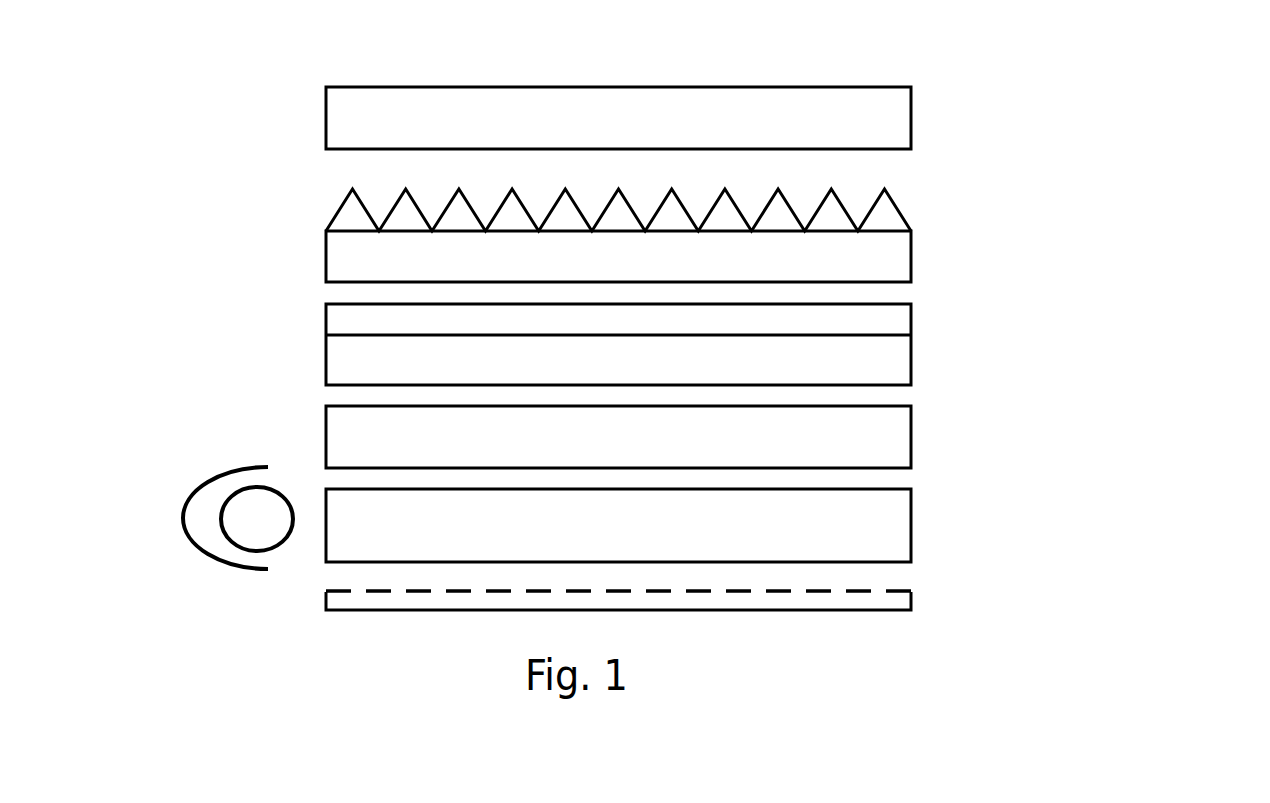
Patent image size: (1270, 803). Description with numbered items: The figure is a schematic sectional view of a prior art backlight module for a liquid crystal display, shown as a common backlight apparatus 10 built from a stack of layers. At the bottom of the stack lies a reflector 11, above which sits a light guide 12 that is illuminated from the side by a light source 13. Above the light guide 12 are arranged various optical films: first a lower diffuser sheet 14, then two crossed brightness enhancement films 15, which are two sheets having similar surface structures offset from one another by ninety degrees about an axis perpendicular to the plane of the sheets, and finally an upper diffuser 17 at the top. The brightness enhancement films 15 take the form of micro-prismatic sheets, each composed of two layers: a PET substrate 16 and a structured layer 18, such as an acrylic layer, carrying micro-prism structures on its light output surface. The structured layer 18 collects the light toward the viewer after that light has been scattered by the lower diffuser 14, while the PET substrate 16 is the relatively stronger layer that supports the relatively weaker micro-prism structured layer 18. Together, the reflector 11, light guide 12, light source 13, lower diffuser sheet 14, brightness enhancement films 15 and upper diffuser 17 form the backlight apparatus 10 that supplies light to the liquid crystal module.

The backlight apparatus 10 is at (1052, 197).
The reflector 11 is at (912, 600).
The light guide 12 is at (902, 528).
The light source 13 is at (237, 528).
The lower diffuser sheet 14 is at (902, 426).
The brightness enhancement films 15 is at (902, 242).
The PET substrate 16 is at (326, 259).
The upper diffuser 17 is at (912, 115).
The structured layer 18 is at (320, 202).